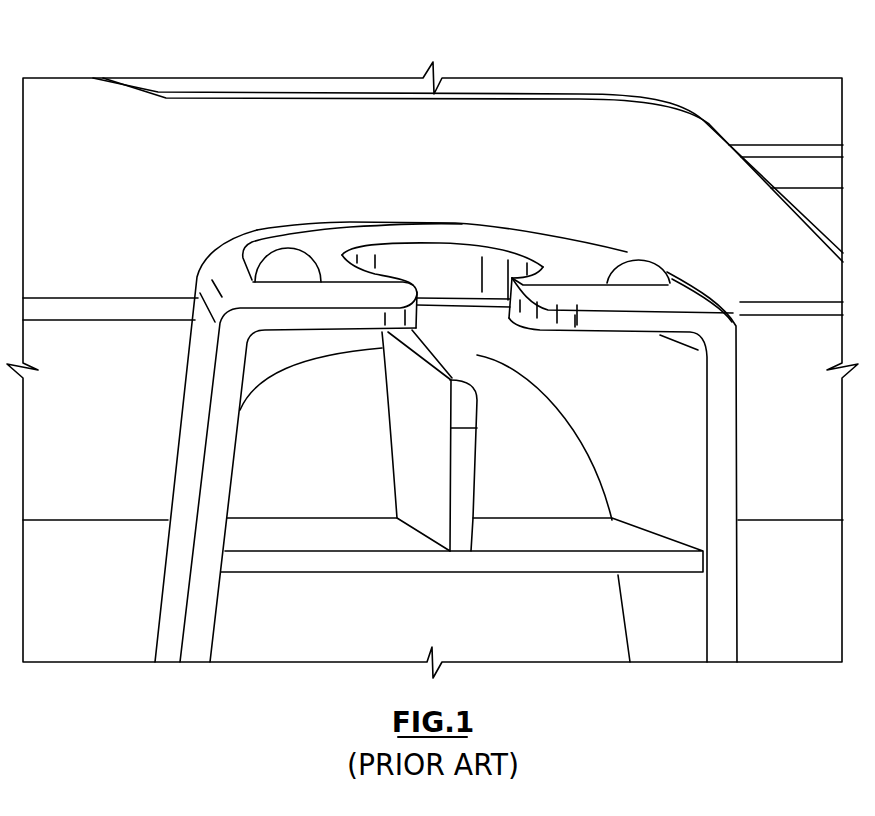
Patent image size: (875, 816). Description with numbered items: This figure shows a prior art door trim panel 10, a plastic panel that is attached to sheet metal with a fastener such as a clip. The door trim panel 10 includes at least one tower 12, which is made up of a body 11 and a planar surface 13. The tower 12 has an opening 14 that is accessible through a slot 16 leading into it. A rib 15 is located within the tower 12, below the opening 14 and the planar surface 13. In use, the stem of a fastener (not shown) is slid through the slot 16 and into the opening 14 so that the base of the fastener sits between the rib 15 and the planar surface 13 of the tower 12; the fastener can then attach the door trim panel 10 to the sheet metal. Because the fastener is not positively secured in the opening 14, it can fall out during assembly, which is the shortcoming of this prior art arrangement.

The door trim panel 10 is at (706, 46).
The body 11 is at (176, 577).
The tower 12 is at (201, 399).
The planar surface 13 is at (570, 257).
The opening 14 is at (463, 260).
The rib 15 is at (409, 439).
The slot 16 is at (460, 320).